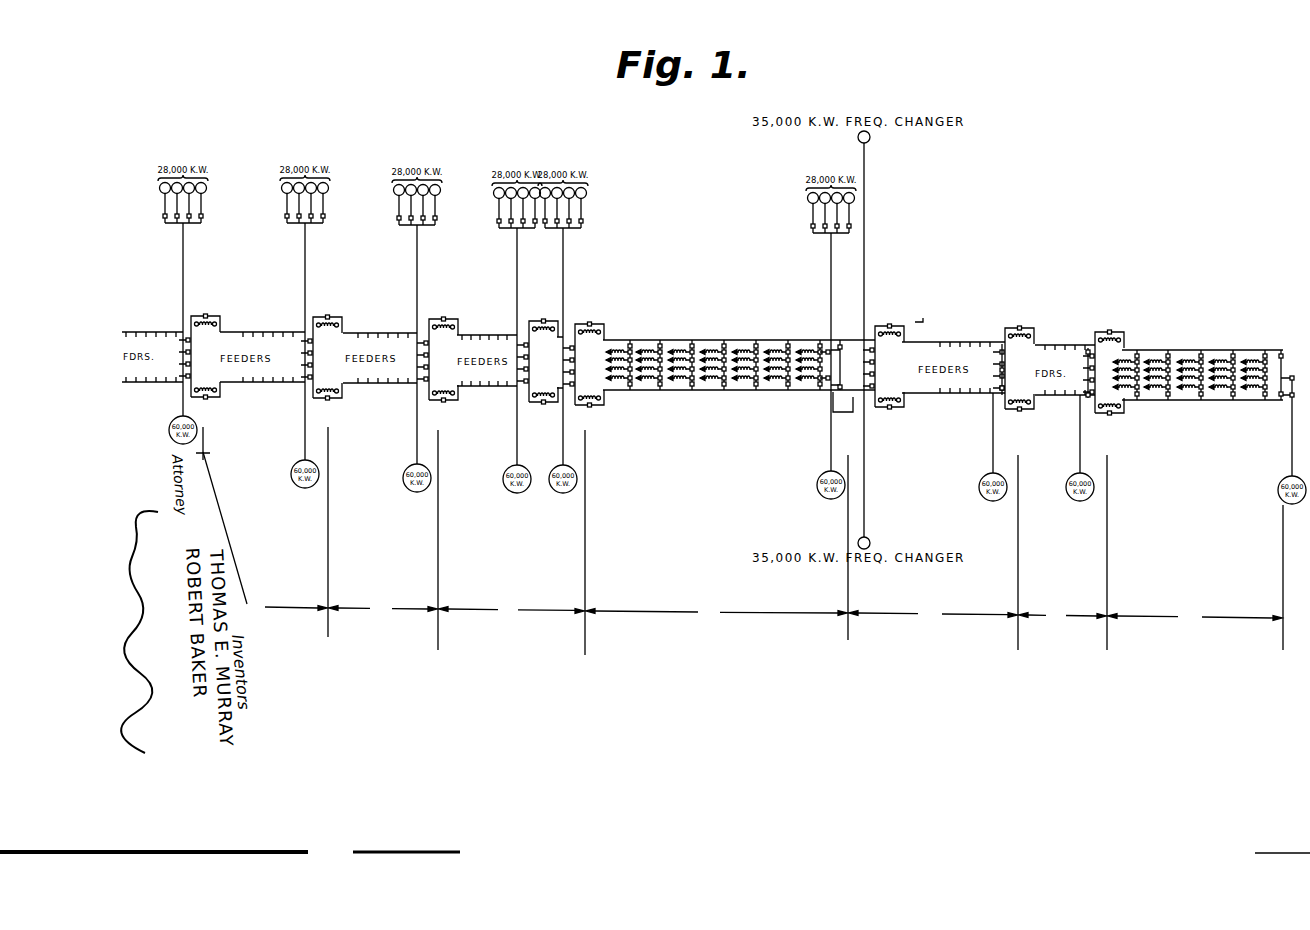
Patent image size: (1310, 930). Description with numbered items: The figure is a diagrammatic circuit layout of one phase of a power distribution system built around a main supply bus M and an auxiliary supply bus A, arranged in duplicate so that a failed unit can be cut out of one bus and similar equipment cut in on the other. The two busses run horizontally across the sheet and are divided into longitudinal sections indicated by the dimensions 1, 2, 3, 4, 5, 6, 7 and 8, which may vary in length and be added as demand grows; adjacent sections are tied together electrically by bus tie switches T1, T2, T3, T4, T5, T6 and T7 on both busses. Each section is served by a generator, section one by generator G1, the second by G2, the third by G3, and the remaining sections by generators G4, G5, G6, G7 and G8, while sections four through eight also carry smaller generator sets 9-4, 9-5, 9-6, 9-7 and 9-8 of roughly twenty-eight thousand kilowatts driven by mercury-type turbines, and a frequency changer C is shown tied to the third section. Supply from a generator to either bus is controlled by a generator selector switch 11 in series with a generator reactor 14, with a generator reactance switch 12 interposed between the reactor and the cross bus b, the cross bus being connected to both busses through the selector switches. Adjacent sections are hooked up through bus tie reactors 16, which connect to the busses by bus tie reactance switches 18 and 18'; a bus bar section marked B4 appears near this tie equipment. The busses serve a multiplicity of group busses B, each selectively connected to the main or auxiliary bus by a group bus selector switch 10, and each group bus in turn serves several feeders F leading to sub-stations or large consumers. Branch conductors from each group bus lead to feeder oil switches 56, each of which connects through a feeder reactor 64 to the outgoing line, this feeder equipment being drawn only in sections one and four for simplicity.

The generator set 9-8 is at (183, 278).
The generator set 9-7 is at (305, 300).
The generator set 9-6 is at (417, 303).
The generator set 9-5 is at (540, 305).
The generator set 9-4 is at (831, 309).
The bus tie switch T7 is at (223, 409).
The bus tie switch T6 is at (344, 410).
The bus tie switch T5 is at (460, 412).
The bus tie switch T4 is at (606, 417).
The bus tie switch T3 is at (886, 423).
The bus tie switch T2 is at (1018, 427).
The bus tie switch T1 is at (1128, 423).
The generator G8 is at (171, 442).
The generator G7 is at (299, 488).
The generator G6 is at (413, 492).
The generator G5 is at (552, 511).
The generator G4 is at (822, 499).
The generator G3 is at (985, 501).
The generator G2 is at (1073, 501).
The generator G1 is at (1282, 504).
The group bus B is at (1258, 357).
The auxiliary supply bus A is at (946, 342).
The 35,000 K.W. frequency changer C is at (889, 535).
The feeder F is at (1233, 395).
The main supply bus M is at (941, 393).
The group bus selector switch 10 is at (1233, 400).
The feeder oil switch 56 is at (1234, 353).
The feeder reactor 64 is at (1245, 394).
The generator selector switch 11 is at (1005, 388).
The generator reactor 14 is at (1054, 396).
The generator reactance switch 12 is at (1089, 370).
The bus tie reactor 16 is at (894, 384).
The bus tie reactance switch 18 is at (863, 376).
The bus tie reactance switch 18' is at (913, 345).
The bus bar section B4 is at (872, 371).
The cross bus b is at (838, 351).
The longitudinal supply bus section 1 is at (1233, 577).
The longitudinal supply bus section 2 is at (1116, 552).
The longitudinal supply bus section 3 is at (985, 552).
The longitudinal supply bus section 4 is at (811, 547).
The longitudinal supply bus section 5 is at (601, 542).
The longitudinal supply bus section 6 is at (436, 540).
The longitudinal supply bus section 7 is at (310, 532).
The longitudinal supply bus section 8 is at (199, 443).